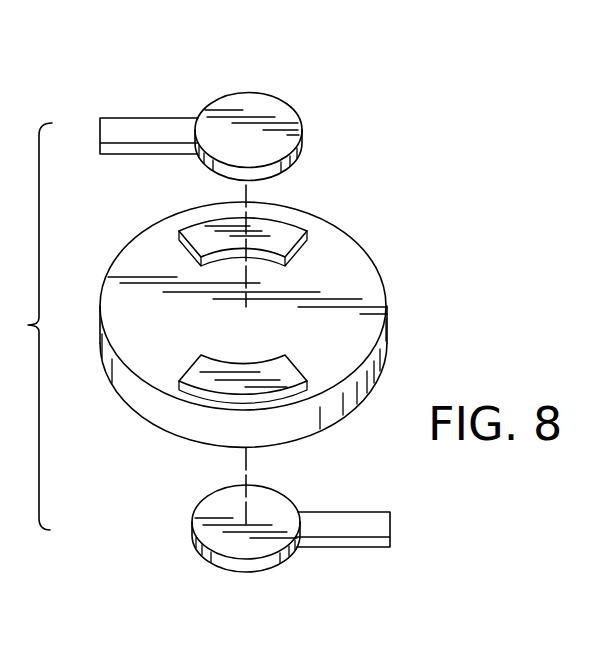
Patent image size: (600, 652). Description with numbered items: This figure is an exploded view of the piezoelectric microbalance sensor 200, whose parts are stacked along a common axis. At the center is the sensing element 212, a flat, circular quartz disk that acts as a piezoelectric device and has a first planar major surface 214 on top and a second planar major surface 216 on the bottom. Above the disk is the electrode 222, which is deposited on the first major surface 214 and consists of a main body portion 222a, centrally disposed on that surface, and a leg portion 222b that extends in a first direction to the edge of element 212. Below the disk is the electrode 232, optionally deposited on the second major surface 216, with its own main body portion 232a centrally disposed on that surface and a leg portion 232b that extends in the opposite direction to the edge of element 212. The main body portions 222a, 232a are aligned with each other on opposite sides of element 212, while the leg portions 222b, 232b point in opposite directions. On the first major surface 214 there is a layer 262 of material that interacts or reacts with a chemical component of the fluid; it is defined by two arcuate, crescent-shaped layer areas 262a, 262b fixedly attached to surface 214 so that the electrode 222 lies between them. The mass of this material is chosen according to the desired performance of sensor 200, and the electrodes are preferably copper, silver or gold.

The sensor 200 is at (420, 202).
The sensing element 212 is at (378, 260).
The first planar major surface 214 is at (360, 342).
The second planar major surface 216 is at (311, 431).
The electrode 222 is at (235, 98).
The main body portion 222a is at (242, 100).
The leg portion 222b is at (140, 127).
The electrode 232 is at (274, 564).
The main body portion 232a is at (248, 550).
The leg portion 232b is at (350, 527).
The layer 262 is at (228, 310).
The arcuate layer area 262a is at (193, 235).
The arcuate layer area 262b is at (207, 378).